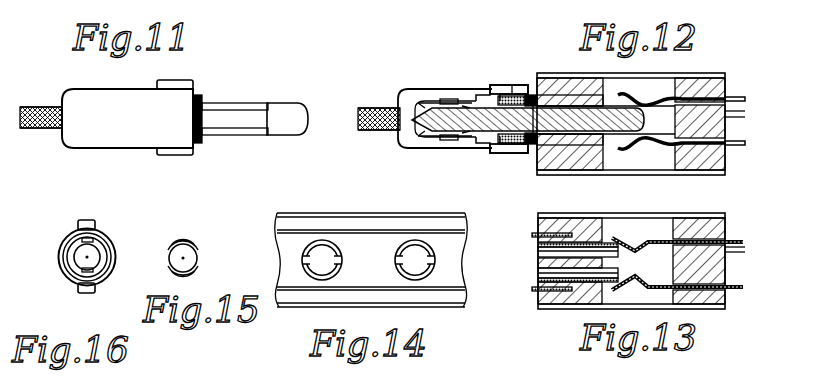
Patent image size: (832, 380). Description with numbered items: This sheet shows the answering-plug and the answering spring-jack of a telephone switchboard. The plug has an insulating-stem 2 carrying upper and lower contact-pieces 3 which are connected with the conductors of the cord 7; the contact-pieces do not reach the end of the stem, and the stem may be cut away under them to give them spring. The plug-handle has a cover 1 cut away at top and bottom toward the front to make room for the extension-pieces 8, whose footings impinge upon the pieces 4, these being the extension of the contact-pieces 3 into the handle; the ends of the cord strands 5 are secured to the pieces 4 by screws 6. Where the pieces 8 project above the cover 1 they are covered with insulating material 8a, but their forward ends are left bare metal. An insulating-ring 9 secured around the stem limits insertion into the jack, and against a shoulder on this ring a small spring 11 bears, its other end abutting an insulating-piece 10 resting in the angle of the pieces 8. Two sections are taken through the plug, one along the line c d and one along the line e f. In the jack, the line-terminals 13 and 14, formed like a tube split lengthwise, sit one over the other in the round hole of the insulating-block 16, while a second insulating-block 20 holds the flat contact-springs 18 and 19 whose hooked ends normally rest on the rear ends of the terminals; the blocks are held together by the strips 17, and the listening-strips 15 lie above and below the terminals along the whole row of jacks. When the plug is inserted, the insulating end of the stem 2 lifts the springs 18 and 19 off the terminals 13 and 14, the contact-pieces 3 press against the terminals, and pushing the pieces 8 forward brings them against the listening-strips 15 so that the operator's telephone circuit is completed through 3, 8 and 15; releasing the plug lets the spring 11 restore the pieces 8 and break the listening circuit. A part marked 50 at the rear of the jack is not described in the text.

In FIG. 11, the cover 1 is at (127, 118).
In FIG. 12, the cover 1 is at (408, 147).
In FIG. 16, the cover 1 is at (59, 255).
In FIG. 11, the insulating-stem 2 is at (287, 119).
In FIG. 12, the insulating-stem 2 is at (533, 121).
In FIG. 15, the insulating-stem 2 is at (198, 252).
In FIG. 16, the insulating-stem 2 is at (100, 254).
In FIG. 11, the contact-pieces 3 is at (235, 120).
In FIG. 15, the contact-pieces 3 is at (216, 272).
In FIG. 12, the extension of the contact-pieces 4 is at (470, 135).
In FIG. 16, the extension of the contact-pieces 4 is at (64, 242).
In FIG. 12, the cord strands 5 is at (428, 110).
In FIG. 12, the screws 6 is at (450, 100).
In FIG. 11, the cord 7 is at (41, 127).
In FIG. 12, the cord 7 is at (366, 131).
In FIG. 11, the extension-pieces 8 is at (185, 80).
In FIG. 12, the extension-pieces 8 is at (504, 85).
In FIG. 16, the extension-pieces 8 is at (98, 222).
In FIG. 12, the insulating material 8a is at (512, 87).
In FIG. 11, the insulating-ring 9 is at (198, 148).
In FIG. 12, the insulating-ring 9 is at (533, 150).
In FIG. 12, the insulating-piece 10 is at (492, 87).
In FIG. 12, the spring 11 is at (528, 94).
In FIG. 16, the spring 11 is at (60, 269).
In FIG. 12, the line-terminal 13 is at (597, 168).
In FIG. 13, the line-terminal 13 is at (538, 280).
In FIG. 14, the line-terminal 13 is at (302, 272).
In FIG. 12, the line-terminal 14 is at (580, 96).
In FIG. 13, the line-terminal 14 is at (538, 243).
In FIG. 14, the line-terminal 14 is at (302, 246).
In FIG. 12, the listening-strips 15 is at (578, 177).
In FIG. 13, the listening-strips 15 is at (533, 233).
In FIG. 14, the listening-strips 15 is at (465, 230).
In FIG. 12, the insulating-block 16 is at (606, 162).
In FIG. 13, the insulating-block 16 is at (537, 304).
In FIG. 14, the insulating-block 16 is at (368, 260).
In FIG. 12, the strips 17 is at (727, 73).
In FIG. 13, the strips 17 is at (727, 217).
In FIG. 14, the strips 17 is at (280, 212).
In FIG. 12, the contact-spring 18 is at (746, 144).
In FIG. 13, the contact-spring 18 is at (745, 288).
In FIG. 12, the contact-spring 19 is at (746, 99).
In FIG. 13, the contact-spring 19 is at (745, 242).
In FIG. 12, the insulating-block 20 is at (727, 125).
In FIG. 13, the insulating-block 20 is at (727, 265).
In FIG. 12, the terminal 50 is at (744, 110).
In FIG. 13, the terminal 50 is at (744, 251).
In FIG. 11, the section line c is at (248, 158).
In FIG. 11, the section line d is at (246, 164).
In FIG. 11, the section line e is at (173, 165).
In FIG. 11, the section line f is at (169, 180).